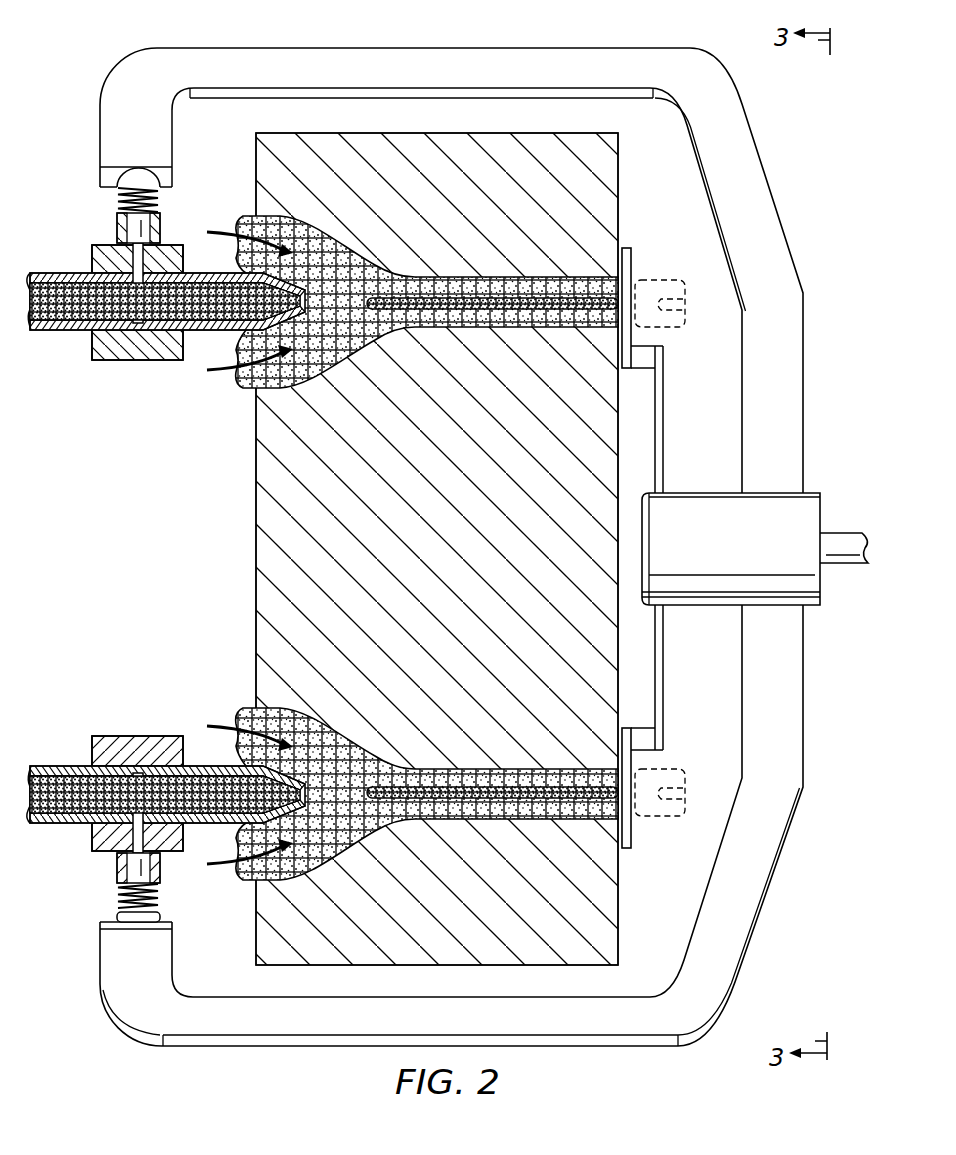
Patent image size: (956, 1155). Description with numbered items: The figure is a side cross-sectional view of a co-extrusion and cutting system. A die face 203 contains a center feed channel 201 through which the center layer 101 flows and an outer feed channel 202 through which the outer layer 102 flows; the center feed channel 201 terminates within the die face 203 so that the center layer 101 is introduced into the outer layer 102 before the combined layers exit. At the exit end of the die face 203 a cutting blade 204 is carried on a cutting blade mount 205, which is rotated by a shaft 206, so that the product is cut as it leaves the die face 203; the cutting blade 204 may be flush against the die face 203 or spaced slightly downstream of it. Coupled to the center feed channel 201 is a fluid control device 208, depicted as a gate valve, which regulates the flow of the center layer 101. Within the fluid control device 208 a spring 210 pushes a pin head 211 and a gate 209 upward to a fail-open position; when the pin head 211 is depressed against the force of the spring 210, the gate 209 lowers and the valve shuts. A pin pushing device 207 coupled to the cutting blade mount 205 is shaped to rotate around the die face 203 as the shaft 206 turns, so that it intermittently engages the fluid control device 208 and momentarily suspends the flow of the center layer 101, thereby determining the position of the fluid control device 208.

The center layer 101 is at (212, 313).
The outer layer 102 is at (346, 852).
The center feed channel 201 is at (50, 273).
The outer feed channel 202 is at (340, 340).
The die face 203 is at (254, 560).
The cutting blade 204 is at (633, 262).
The cutting blade mount 205 is at (751, 560).
The shaft 206 is at (843, 566).
The pin pushing device 207 is at (775, 209).
The fluid control device 208 is at (166, 279).
The gate 209 is at (130, 305).
The spring 210 is at (117, 204).
The pin head 211 is at (135, 168).